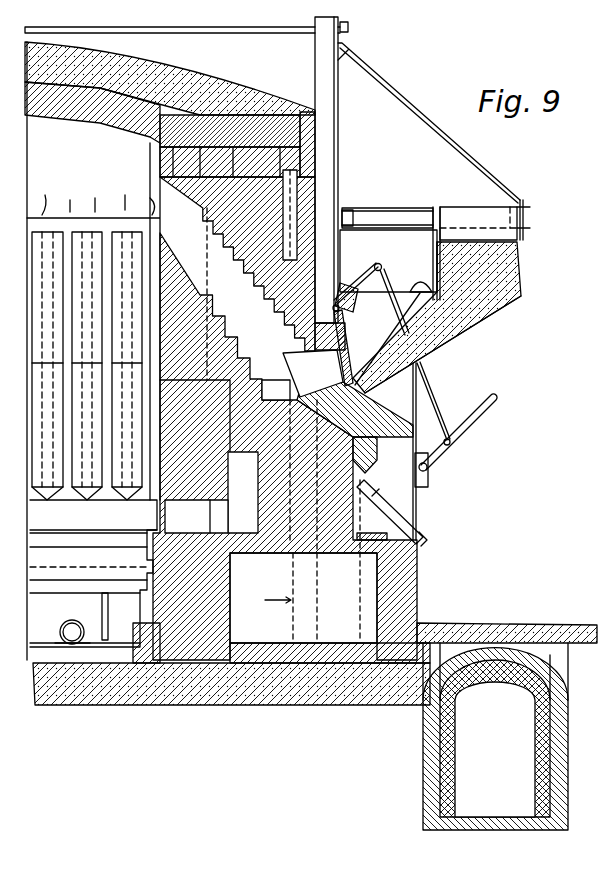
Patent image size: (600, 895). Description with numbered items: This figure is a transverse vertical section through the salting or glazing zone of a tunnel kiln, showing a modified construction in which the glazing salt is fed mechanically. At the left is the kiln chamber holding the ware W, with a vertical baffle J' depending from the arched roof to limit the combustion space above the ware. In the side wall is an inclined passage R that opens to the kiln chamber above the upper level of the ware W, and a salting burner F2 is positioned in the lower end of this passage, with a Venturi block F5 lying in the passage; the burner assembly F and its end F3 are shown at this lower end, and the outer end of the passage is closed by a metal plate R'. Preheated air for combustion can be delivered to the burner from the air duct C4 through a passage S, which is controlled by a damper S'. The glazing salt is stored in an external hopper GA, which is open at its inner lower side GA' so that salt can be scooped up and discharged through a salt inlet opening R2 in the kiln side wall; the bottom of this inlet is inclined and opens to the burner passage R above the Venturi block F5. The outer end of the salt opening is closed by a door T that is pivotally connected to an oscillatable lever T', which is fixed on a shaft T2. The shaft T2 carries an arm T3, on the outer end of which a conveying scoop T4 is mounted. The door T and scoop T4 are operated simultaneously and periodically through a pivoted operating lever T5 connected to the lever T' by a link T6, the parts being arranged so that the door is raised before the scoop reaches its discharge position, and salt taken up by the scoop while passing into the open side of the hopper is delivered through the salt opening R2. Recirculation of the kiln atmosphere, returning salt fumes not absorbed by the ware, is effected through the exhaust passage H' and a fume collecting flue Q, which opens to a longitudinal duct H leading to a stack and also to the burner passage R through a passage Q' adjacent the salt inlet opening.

The vertical baffle J' is at (170, 101).
The ware W is at (48, 190).
The inclined passage R is at (219, 294).
The passage Q' is at (271, 376).
The salt inlet opening R2 is at (313, 373).
The oscillatable lever T' is at (371, 258).
The conveying scoop T4 is at (418, 268).
The arm T3 is at (396, 292).
The shaft T2 is at (356, 289).
The door T is at (376, 339).
The external hopper GA is at (456, 317).
The open inner lower side of hopper GA' is at (443, 344).
The link T6 is at (443, 405).
The operating lever T5 is at (470, 428).
The Venturi block F5 is at (378, 457).
The salting burner F2 is at (375, 483).
The plunger F is at (413, 498).
The metal plate R' is at (443, 451).
The plunger end F3 is at (424, 538).
The fume collecting flue Q is at (243, 492).
The exhaust passage H' is at (196, 516).
The damper S' is at (372, 524).
The air duct C4 is at (265, 600).
The passage S is at (303, 598).
The longitudinal duct H is at (507, 726).